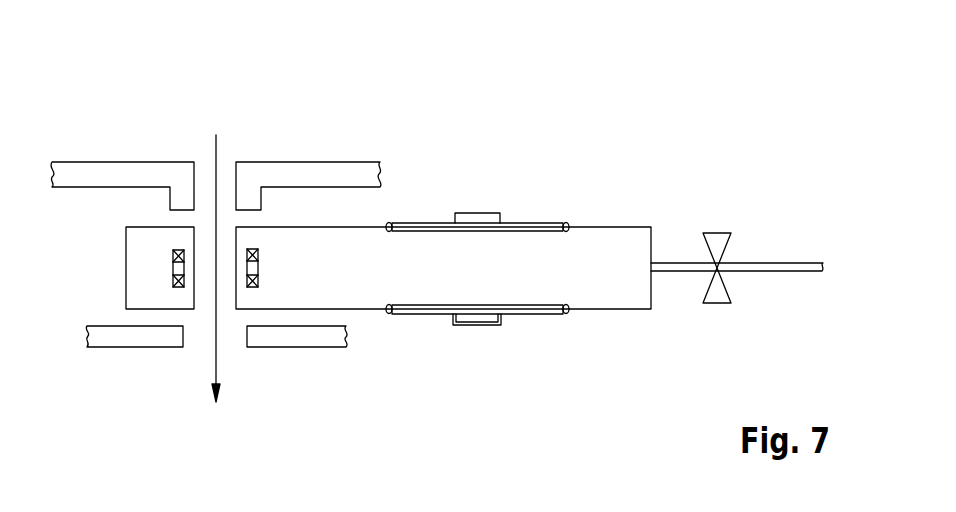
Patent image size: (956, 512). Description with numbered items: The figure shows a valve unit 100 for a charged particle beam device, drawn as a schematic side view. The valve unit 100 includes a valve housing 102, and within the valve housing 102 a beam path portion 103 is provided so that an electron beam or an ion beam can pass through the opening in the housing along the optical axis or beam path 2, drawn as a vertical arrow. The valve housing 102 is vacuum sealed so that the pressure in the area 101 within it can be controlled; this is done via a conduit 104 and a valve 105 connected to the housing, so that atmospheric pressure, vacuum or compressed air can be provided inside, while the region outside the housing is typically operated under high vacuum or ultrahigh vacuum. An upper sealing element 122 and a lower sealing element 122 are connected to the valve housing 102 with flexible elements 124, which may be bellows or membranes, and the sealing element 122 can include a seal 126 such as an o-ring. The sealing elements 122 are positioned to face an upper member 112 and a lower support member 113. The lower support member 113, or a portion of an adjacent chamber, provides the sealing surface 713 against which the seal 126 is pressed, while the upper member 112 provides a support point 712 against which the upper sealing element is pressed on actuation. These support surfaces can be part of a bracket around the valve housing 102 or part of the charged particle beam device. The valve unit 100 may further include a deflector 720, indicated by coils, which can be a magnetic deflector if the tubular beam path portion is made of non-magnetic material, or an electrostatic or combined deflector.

The valve unit 100 is at (640, 113).
The optical axis or beam path 2 is at (216, 156).
The upper member 112 is at (96, 175).
The support point 712 is at (252, 204).
The valve housing 102 is at (126, 265).
The lower support member 113 is at (118, 340).
The beam path portion 103 is at (206, 308).
The area within the valve housing 101 is at (471, 277).
The deflector 720 is at (258, 253).
The sealing surface 713 is at (277, 327).
The sealing element 122 is at (470, 220).
The flexible elements 124 is at (567, 225).
The seal 126 is at (475, 325).
The conduit 104 is at (778, 263).
The valve 105 is at (725, 296).